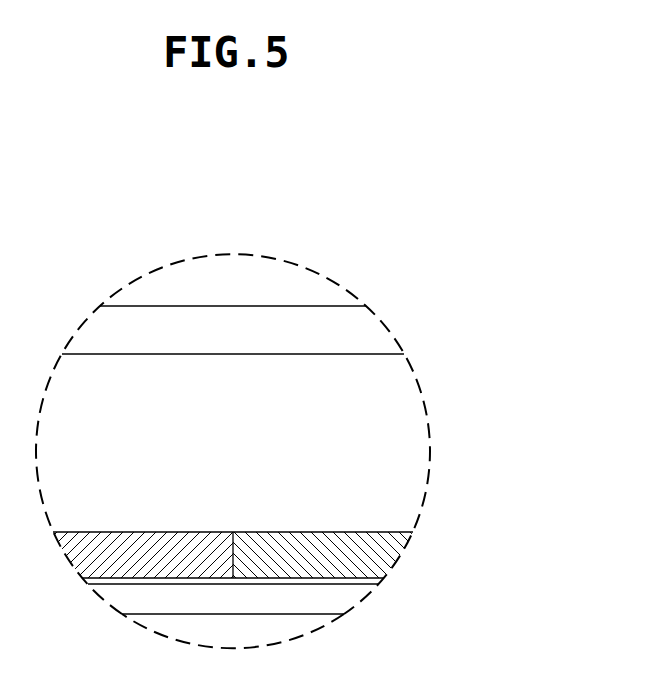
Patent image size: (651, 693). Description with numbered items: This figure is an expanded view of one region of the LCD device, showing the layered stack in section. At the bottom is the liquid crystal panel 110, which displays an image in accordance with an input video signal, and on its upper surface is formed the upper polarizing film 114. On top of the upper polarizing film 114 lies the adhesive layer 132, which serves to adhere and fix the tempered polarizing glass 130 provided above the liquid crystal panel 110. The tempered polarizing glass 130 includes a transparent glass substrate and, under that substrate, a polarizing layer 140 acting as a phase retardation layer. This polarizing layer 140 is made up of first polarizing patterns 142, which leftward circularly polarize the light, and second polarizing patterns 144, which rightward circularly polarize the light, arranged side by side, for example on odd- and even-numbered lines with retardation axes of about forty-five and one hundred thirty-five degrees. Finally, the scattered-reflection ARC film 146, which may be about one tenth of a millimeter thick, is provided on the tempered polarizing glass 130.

The liquid crystal panel 110 is at (302, 623).
The upper polarizing film 114 is at (357, 598).
The tempered polarizing glass 130 is at (418, 453).
The adhesive layer 132 is at (130, 587).
The polarizing layer 140 is at (276, 535).
The first polarizing patterns 142 is at (203, 542).
The second polarizing patterns 144 is at (388, 559).
The scattered-reflection film (ARC film) 146 is at (372, 327).